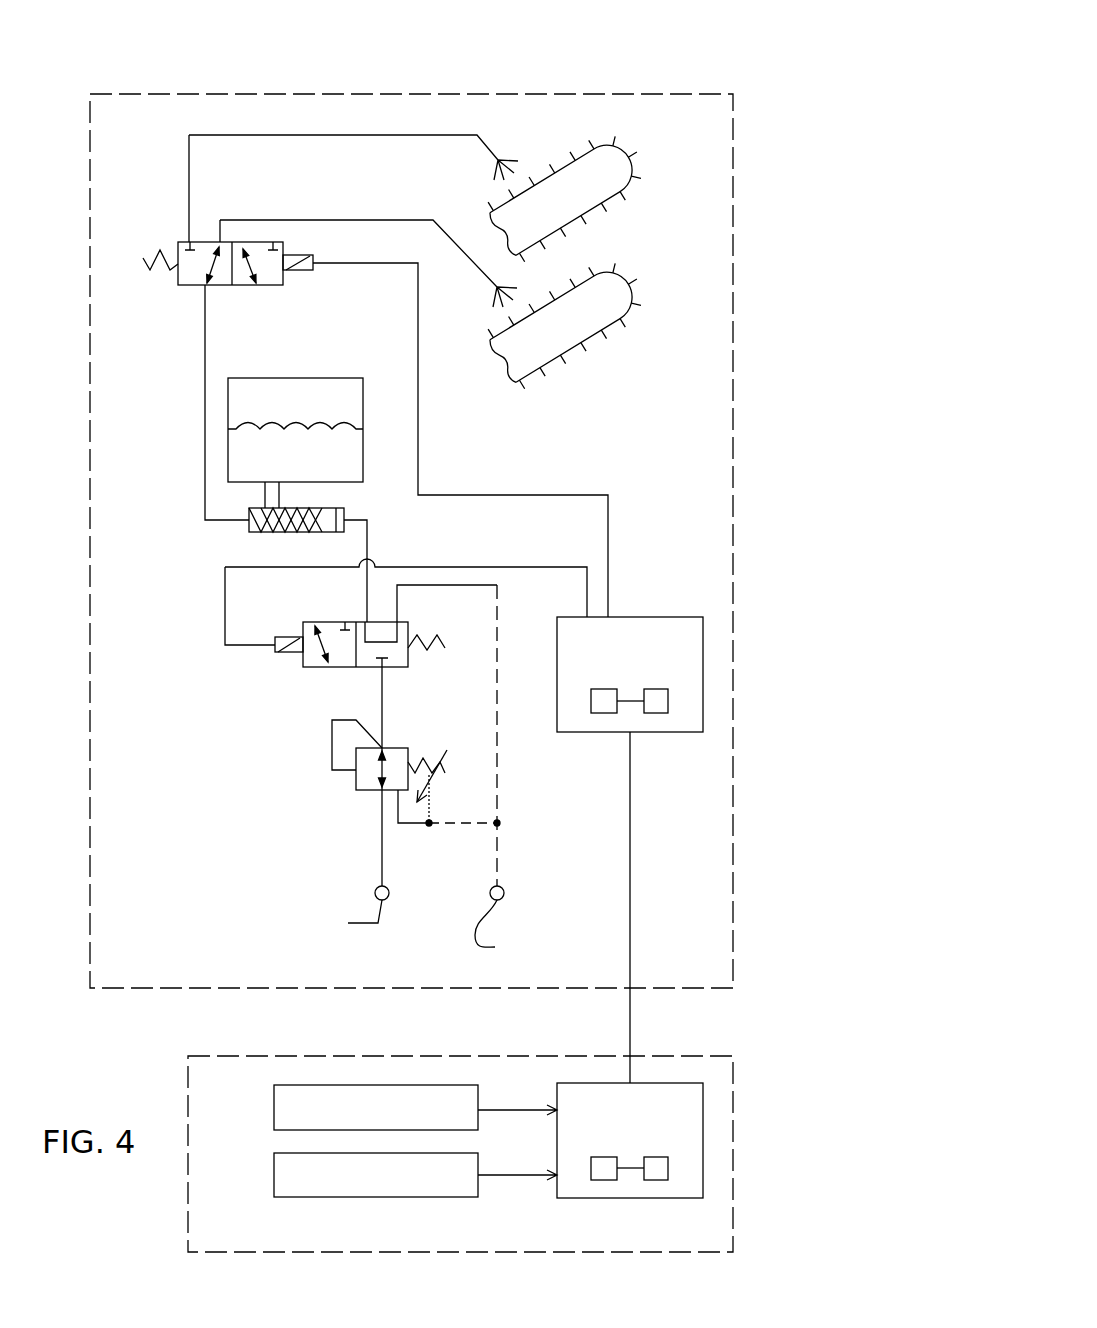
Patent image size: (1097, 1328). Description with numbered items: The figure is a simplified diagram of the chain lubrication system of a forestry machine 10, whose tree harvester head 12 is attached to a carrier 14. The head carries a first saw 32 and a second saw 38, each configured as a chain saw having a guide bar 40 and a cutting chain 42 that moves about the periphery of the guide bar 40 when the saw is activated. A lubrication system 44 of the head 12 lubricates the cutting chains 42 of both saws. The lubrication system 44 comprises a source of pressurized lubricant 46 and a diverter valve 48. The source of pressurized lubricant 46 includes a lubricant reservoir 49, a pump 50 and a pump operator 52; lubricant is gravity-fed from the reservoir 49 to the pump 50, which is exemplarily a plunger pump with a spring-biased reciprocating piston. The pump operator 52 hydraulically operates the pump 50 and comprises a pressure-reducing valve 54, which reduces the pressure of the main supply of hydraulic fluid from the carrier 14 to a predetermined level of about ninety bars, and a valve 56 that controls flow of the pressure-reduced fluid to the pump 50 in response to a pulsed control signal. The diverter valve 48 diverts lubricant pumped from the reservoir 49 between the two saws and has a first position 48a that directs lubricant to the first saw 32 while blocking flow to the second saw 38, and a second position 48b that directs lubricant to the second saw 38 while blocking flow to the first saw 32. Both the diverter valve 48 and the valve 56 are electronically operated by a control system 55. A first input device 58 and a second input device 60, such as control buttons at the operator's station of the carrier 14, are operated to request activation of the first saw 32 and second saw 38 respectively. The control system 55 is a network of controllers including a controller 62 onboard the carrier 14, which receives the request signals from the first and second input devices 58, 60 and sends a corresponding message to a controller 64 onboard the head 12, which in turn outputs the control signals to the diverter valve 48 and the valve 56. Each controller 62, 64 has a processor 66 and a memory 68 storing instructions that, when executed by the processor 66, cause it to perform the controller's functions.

The forestry machine 10 is at (767, 113).
The tree harvester head 12 is at (597, 94).
The carrier 14 is at (733, 1155).
The first saw 32 is at (649, 259).
The second saw 38 is at (649, 131).
The guide bar 40 is at (607, 182).
The cutting chain 42 is at (603, 208).
The lubrication system 44 is at (180, 595).
The source of pressurized lubricant 46 is at (194, 668).
The diverter valve 48 is at (245, 305).
The first position 48a is at (188, 286).
The second position 48b is at (283, 285).
The lubricant reservoir 49 is at (356, 378).
The pump 50 is at (250, 531).
The pump operator 52 is at (246, 687).
The pressure-reducing valve 54 is at (356, 784).
The control system 55 is at (688, 1010).
The valve 56 is at (316, 668).
The first input device 58 is at (274, 1110).
The second input device 60 is at (274, 1167).
The controller 62 is at (638, 1198).
The controller 64 is at (653, 617).
The processor 66 is at (605, 689).
The memory 68 is at (657, 689).